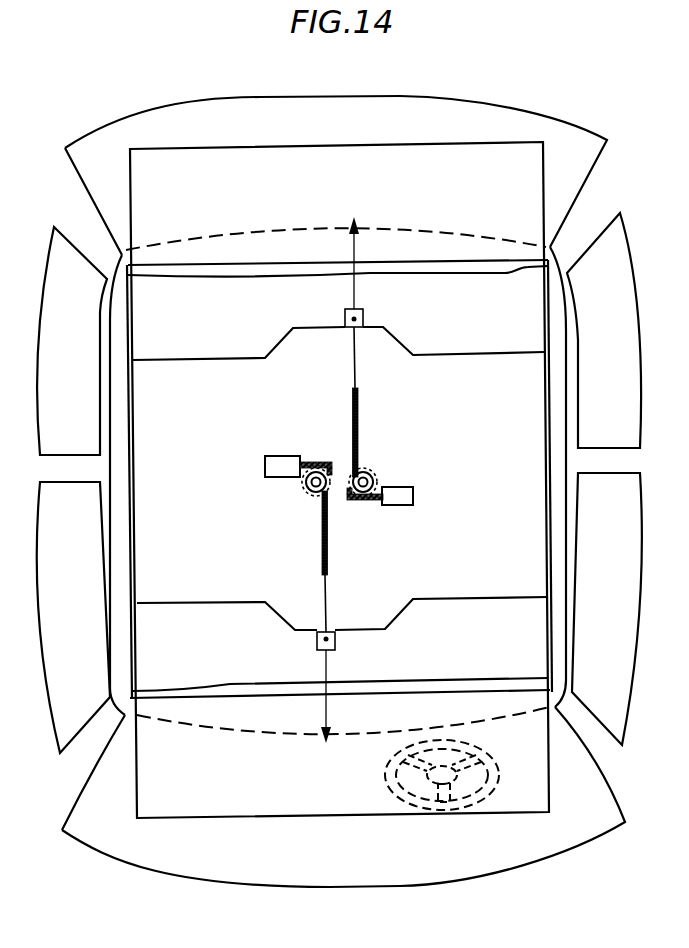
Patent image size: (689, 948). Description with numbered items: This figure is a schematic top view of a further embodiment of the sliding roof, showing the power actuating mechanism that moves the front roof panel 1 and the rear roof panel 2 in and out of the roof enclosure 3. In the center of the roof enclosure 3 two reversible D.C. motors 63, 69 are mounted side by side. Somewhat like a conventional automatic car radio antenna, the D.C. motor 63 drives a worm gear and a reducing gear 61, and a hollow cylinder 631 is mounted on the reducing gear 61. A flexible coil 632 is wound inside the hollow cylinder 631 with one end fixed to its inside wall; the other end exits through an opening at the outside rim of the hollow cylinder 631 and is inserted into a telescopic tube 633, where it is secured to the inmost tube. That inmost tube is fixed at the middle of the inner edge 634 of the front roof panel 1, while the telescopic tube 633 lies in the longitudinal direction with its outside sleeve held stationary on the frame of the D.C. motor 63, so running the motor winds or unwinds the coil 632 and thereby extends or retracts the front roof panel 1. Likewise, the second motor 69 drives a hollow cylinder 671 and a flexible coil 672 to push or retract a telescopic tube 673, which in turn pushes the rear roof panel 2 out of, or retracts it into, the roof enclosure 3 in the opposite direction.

The front roof panel 1 is at (167, 797).
The rear roof panel 2 is at (209, 173).
The roof enclosure 3 is at (552, 461).
The reducing gear 61 is at (418, 844).
The D.C. motor 63 is at (265, 466).
The hollow cylinder 631 is at (307, 488).
The flexible coil 632 is at (328, 532).
The telescopic tube 633 is at (328, 583).
The inner edge 634 is at (335, 641).
The hollow cylinder 671 is at (378, 477).
The flexible coil 672 is at (358, 423).
The telescopic tube 673 is at (357, 376).
The D.C. motor 69 is at (413, 495).